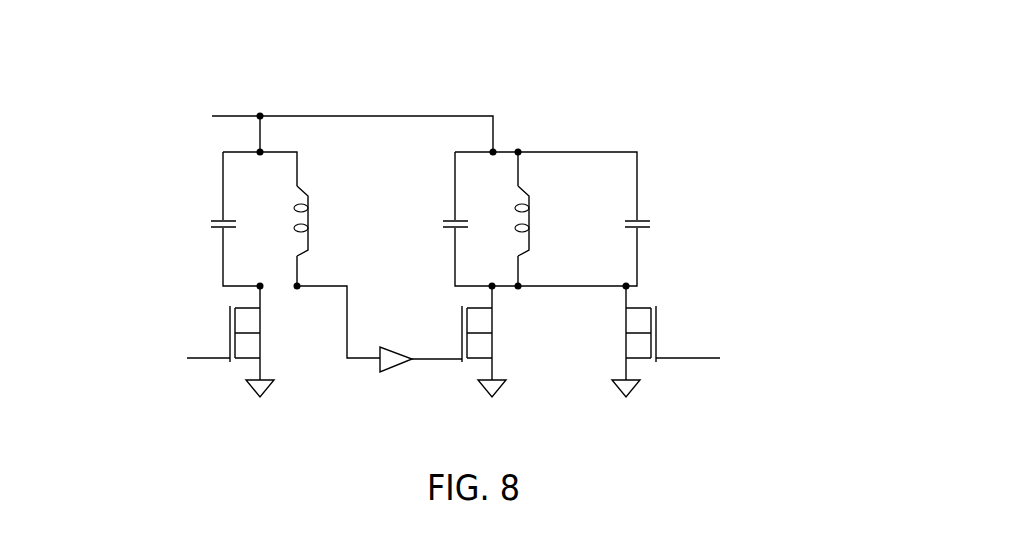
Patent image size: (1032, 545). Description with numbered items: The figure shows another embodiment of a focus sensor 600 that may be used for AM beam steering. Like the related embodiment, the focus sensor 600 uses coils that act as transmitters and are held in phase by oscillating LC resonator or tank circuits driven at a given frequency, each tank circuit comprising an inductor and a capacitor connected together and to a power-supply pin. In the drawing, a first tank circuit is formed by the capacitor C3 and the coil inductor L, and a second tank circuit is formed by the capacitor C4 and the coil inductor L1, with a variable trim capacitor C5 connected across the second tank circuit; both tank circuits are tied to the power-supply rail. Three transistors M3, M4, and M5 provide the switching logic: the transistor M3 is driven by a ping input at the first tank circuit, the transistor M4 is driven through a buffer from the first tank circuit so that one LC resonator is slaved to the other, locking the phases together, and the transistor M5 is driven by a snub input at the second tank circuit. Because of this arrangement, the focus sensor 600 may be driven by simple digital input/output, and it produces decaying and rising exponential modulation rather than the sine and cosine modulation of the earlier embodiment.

The focus sensor 600 is at (491, 204).
The capacitor C3 is at (235, 219).
The capacitor C4 is at (480, 219).
The variable trim capacitor C5 is at (732, 226).
The coil A1 inductor L is at (341, 221).
The coil B inductor L1 is at (557, 204).
The NMOS transistor M3 is at (254, 341).
The NMOS transistor M4 is at (507, 341).
The NMOS transistor M5 is at (643, 341).